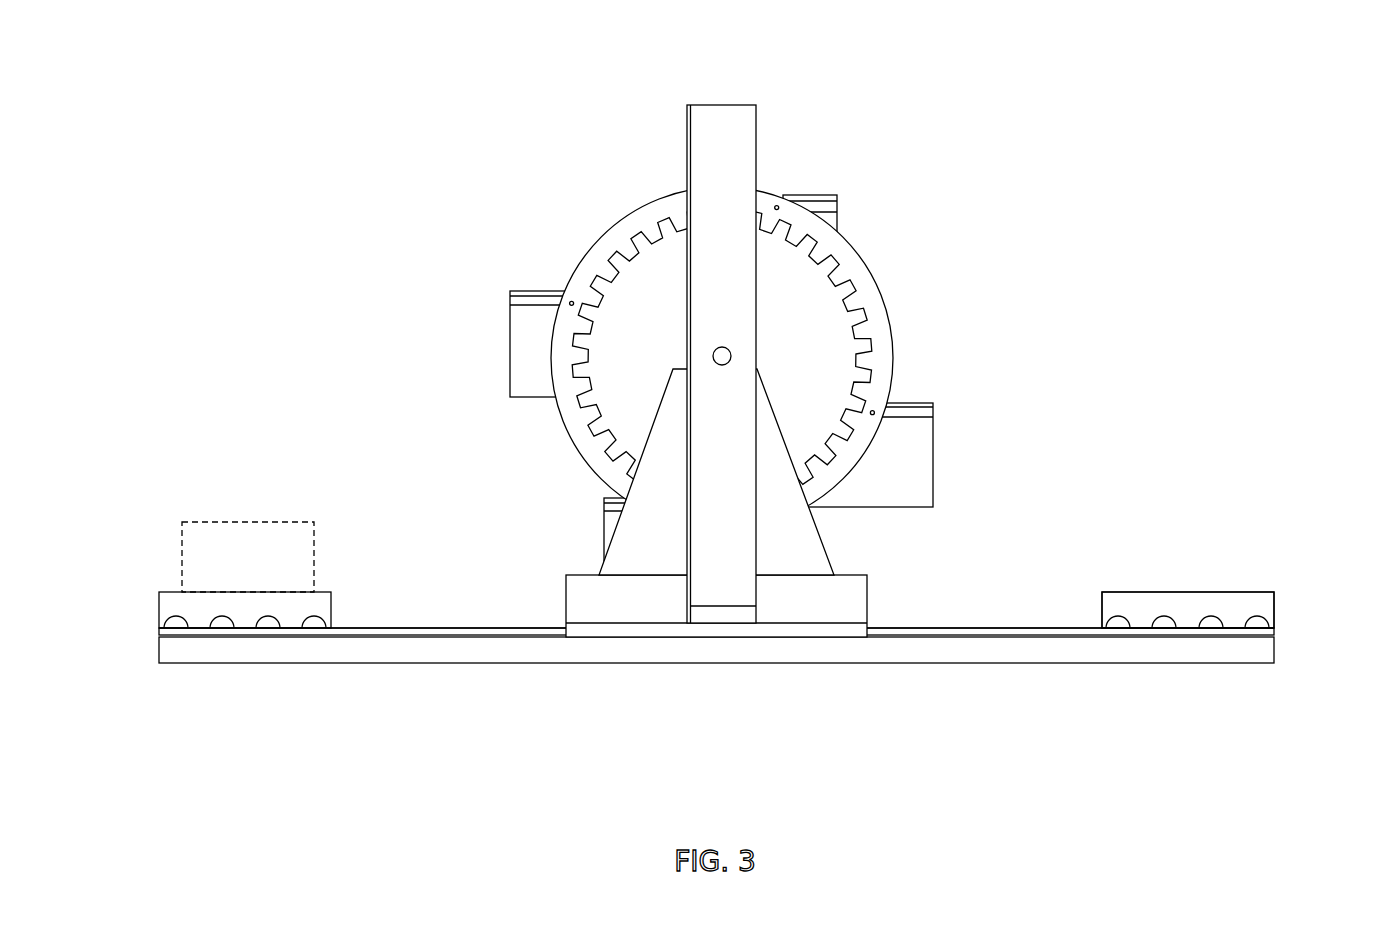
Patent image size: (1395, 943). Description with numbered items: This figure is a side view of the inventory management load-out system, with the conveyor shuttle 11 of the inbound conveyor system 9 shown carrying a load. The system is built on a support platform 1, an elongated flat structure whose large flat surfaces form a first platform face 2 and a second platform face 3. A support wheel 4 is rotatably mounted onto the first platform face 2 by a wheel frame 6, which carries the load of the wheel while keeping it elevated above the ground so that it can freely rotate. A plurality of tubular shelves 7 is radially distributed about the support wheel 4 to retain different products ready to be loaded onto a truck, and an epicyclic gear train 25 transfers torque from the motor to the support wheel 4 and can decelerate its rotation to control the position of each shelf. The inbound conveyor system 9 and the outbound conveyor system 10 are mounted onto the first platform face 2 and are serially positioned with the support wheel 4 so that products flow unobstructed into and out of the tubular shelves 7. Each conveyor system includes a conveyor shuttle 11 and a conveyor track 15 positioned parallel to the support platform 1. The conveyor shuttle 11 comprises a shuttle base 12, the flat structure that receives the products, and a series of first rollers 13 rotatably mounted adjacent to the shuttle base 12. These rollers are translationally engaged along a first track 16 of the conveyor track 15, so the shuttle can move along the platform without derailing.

The support platform 1 is at (750, 687).
The first platform face 2 is at (1145, 642).
The second platform face 3 is at (1010, 668).
The support wheel 4 is at (863, 277).
The wheel frame 6 is at (730, 112).
The tubular shelves 7 is at (522, 336).
The inbound conveyor system 9 is at (269, 415).
The outbound conveyor system 10 is at (1160, 485).
The conveyor shuttle 11 is at (748, 575).
The shuttle base 12 is at (327, 598).
The series of first rollers 13 is at (167, 623).
The conveyor track 15 is at (714, 632).
The first track 16 is at (162, 631).
The epicyclic gear train 25 is at (633, 227).